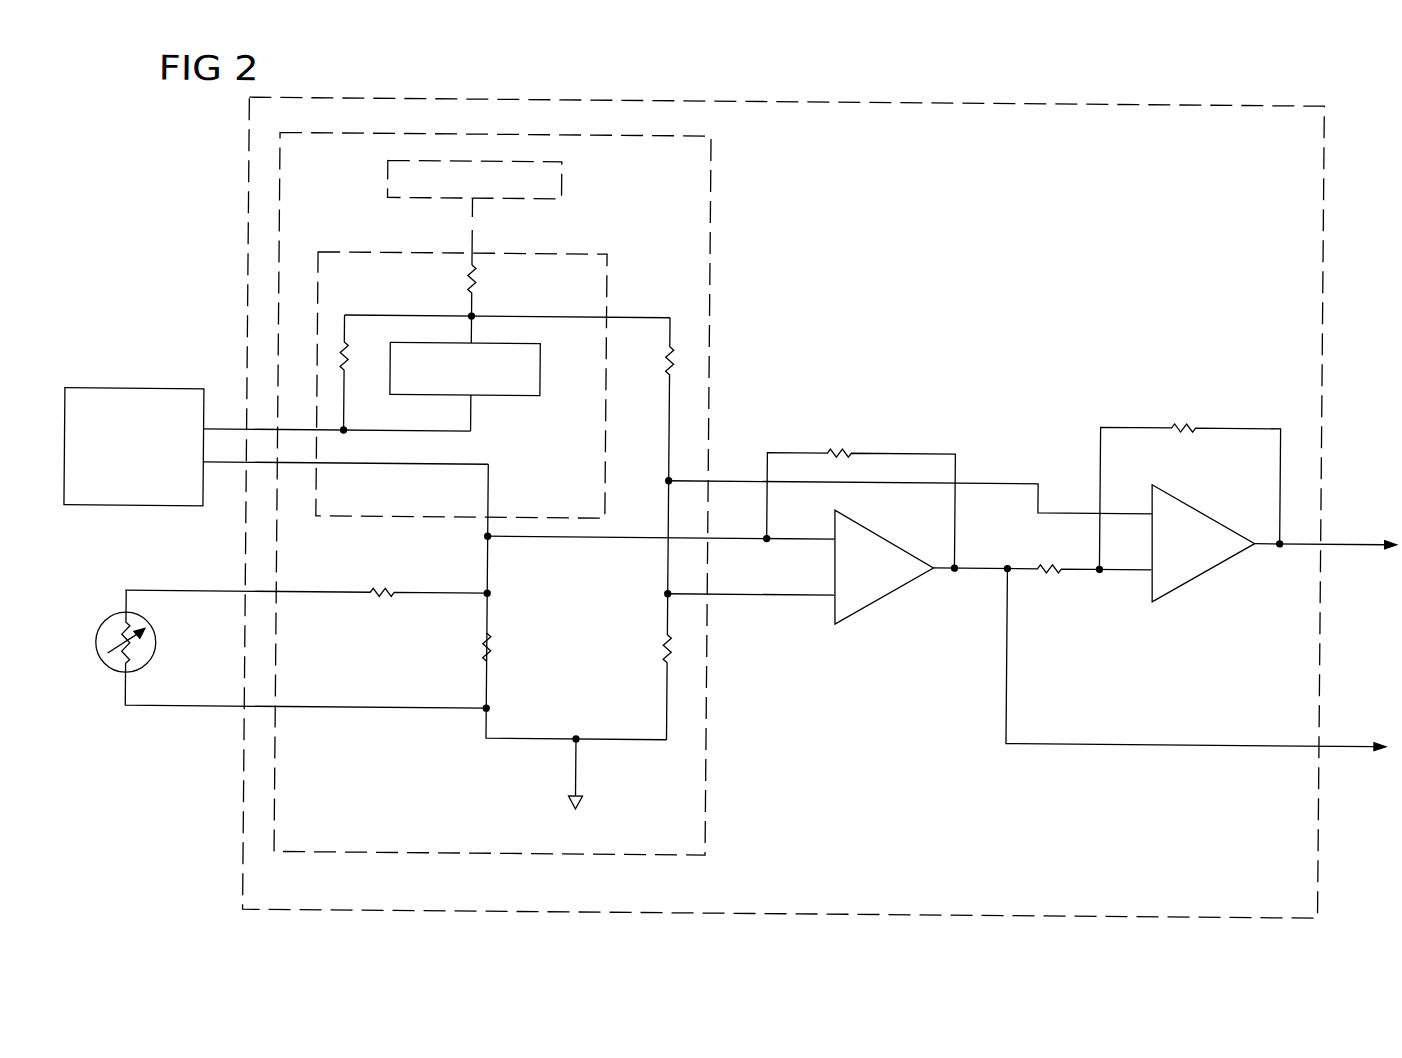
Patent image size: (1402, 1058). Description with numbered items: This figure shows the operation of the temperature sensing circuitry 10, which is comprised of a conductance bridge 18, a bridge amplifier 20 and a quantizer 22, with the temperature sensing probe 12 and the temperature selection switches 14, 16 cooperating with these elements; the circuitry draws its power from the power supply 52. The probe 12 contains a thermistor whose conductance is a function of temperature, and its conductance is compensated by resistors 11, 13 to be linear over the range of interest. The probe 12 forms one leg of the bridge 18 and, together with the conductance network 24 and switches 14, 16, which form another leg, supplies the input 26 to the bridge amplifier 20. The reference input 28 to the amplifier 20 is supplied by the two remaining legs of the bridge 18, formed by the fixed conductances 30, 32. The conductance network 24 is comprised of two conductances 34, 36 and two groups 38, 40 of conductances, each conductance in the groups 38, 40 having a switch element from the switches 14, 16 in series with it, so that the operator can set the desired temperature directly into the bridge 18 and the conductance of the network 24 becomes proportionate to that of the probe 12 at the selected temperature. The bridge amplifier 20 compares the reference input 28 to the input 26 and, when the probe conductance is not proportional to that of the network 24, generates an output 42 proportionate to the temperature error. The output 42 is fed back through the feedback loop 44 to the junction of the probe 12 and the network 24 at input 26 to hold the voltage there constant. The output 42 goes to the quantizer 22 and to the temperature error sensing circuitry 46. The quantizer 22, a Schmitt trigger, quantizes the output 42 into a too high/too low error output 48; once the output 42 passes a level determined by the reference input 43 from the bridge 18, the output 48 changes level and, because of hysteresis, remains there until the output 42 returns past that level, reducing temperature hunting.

The temperature sensing circuitry 10 is at (726, 913).
The resistor 11 is at (384, 601).
The temperature sensing probe 12 is at (153, 662).
The resistor 13 is at (481, 655).
The temperature selection switch 14 is at (277, 415).
The temperature selection switch 16 is at (134, 392).
The conductance bridge 18 is at (643, 858).
The bridge amplifier 20 is at (890, 540).
The quantizer 22 is at (1220, 514).
The conductance network 24 is at (407, 520).
The input 26 is at (813, 536).
The reference input 28 is at (819, 594).
The fixed conductance 30 is at (664, 363).
The fixed conductance 32 is at (661, 653).
The conductance 34 is at (342, 345).
The conductance 36 is at (468, 282).
The group of conductances 38 is at (481, 376).
The group of conductances 40 is at (501, 397).
The output 42 is at (988, 565).
The reference input 43 is at (1013, 479).
The feedback loop 44 is at (887, 448).
The temperature error sensing circuitry 46 is at (1197, 682).
The error output 48 is at (1300, 537).
The power supply 52 is at (562, 185).